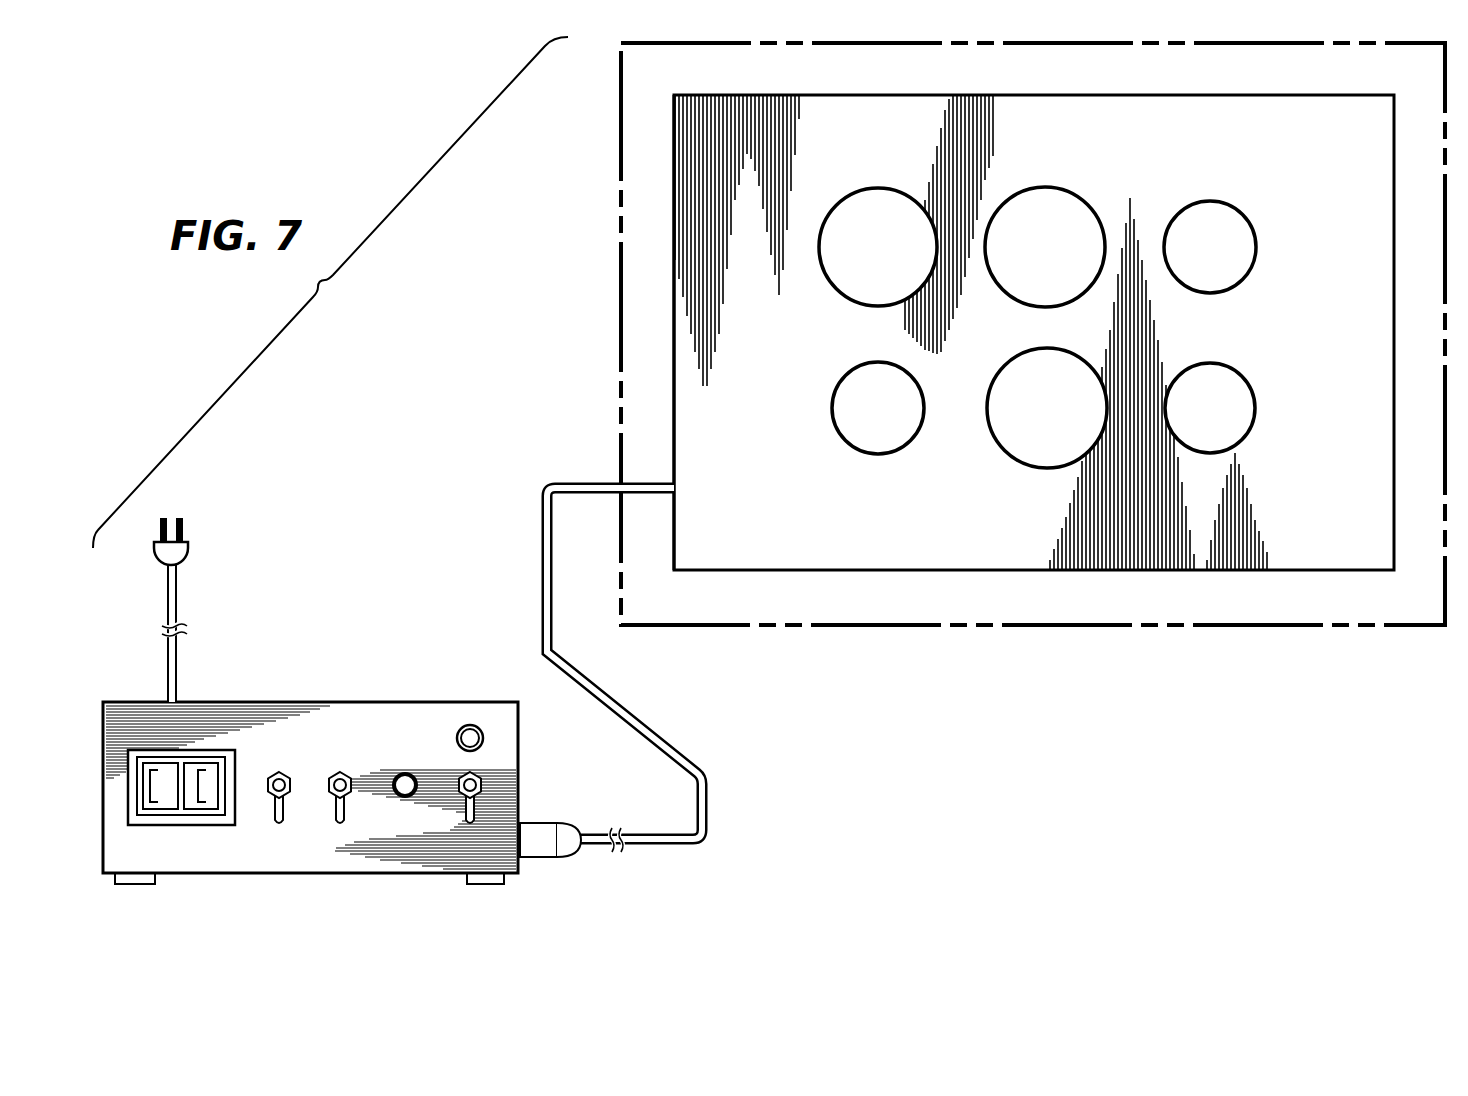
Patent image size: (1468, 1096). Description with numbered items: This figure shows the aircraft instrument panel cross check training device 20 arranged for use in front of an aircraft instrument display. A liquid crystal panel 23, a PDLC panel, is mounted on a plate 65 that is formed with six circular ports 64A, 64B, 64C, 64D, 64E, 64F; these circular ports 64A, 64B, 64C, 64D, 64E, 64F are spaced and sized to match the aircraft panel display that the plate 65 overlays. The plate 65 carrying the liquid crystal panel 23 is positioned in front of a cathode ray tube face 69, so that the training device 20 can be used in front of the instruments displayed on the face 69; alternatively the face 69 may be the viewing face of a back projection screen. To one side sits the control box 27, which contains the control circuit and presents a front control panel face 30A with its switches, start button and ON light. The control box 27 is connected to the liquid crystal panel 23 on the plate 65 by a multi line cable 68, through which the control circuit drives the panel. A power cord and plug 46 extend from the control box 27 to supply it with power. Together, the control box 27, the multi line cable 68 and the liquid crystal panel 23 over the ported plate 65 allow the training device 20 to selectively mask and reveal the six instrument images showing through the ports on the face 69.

The cathode ray tube face 69 is at (621, 78).
The liquid crystal panel 23 is at (664, 125).
The plate 65 is at (670, 325).
The circular port 64A is at (878, 188).
The circular port 64B is at (1057, 188).
The circular port 64C is at (1230, 203).
The circular port 64D is at (1243, 441).
The circular port 64E is at (1001, 446).
The circular port 64F is at (845, 440).
The multi line cable 68 is at (540, 548).
The aircraft instrument panel cross check training device 20 is at (339, 655).
The control box 27 is at (426, 702).
The front control panel face 30A is at (453, 713).
The power cord plug 46 is at (190, 553).